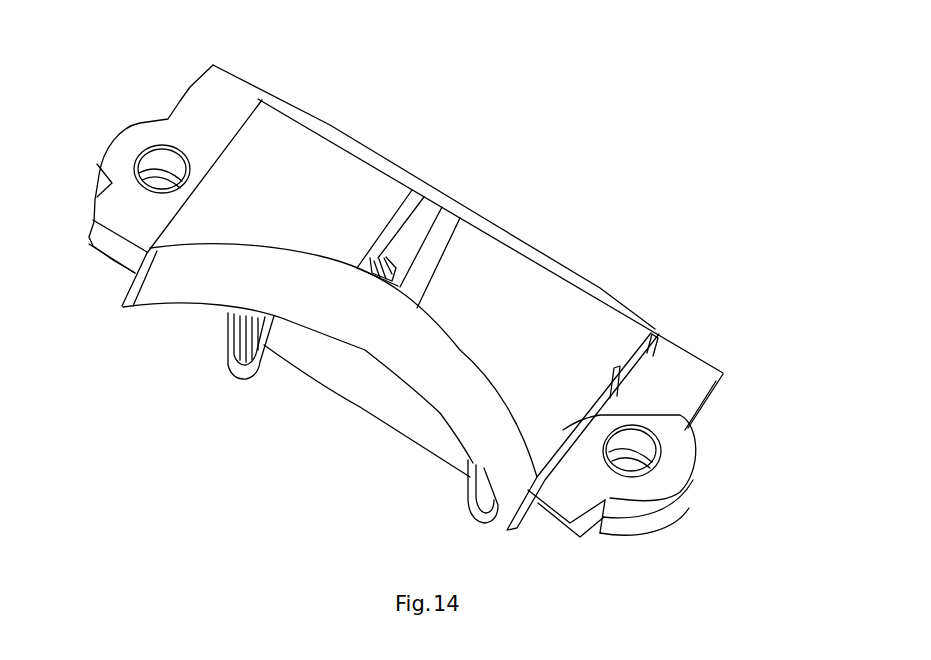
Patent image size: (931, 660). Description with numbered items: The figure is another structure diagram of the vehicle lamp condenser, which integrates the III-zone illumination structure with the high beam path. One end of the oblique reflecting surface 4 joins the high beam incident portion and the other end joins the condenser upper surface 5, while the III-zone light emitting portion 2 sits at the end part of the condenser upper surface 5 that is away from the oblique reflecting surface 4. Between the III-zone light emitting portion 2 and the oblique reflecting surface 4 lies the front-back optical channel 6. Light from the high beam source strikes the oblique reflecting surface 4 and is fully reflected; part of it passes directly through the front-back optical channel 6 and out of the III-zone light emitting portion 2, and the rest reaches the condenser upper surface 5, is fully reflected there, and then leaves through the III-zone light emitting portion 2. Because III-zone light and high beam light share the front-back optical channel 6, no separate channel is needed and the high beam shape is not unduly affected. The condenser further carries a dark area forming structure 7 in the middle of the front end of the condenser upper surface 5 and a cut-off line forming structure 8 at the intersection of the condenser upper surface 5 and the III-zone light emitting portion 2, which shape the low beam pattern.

The III-zone light emitting portion 2 is at (367, 320).
The oblique reflecting surface 4 is at (602, 297).
The condenser upper surface 5 is at (297, 178).
The front-back optical channel 6 is at (687, 425).
The 50 L dark area forming structure 7 is at (448, 212).
The cut-off line forming structure 8 is at (225, 244).